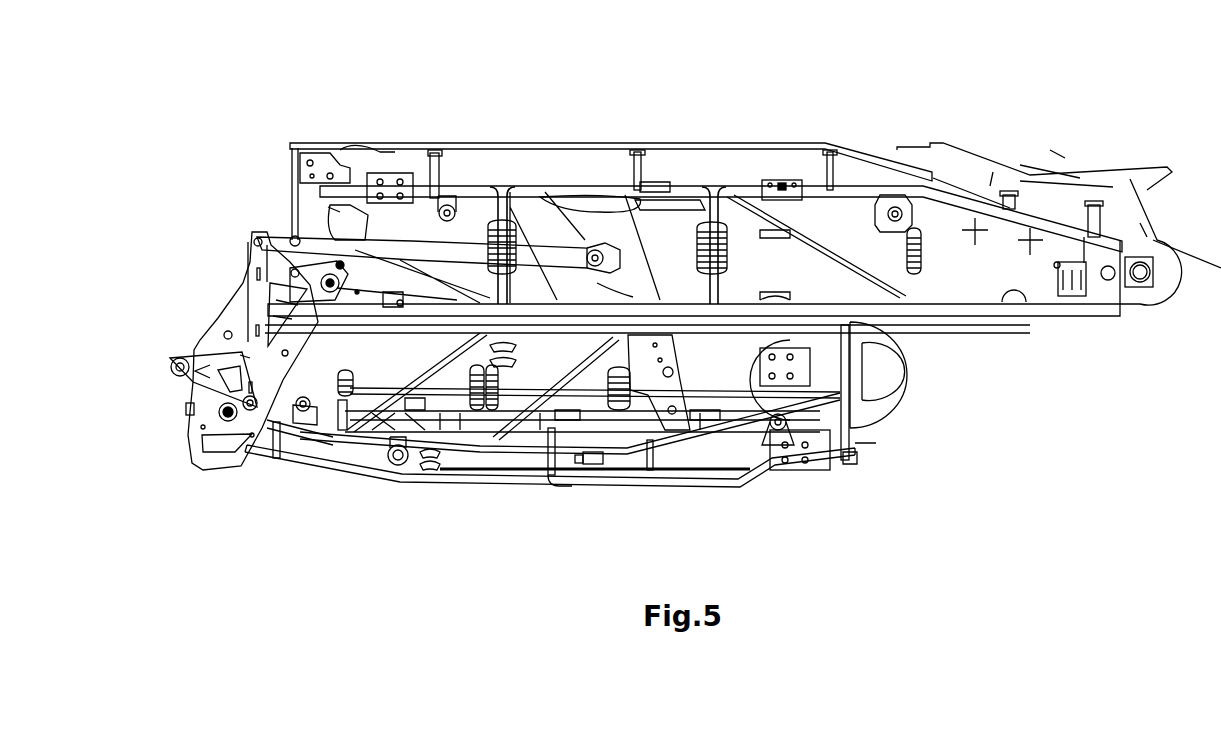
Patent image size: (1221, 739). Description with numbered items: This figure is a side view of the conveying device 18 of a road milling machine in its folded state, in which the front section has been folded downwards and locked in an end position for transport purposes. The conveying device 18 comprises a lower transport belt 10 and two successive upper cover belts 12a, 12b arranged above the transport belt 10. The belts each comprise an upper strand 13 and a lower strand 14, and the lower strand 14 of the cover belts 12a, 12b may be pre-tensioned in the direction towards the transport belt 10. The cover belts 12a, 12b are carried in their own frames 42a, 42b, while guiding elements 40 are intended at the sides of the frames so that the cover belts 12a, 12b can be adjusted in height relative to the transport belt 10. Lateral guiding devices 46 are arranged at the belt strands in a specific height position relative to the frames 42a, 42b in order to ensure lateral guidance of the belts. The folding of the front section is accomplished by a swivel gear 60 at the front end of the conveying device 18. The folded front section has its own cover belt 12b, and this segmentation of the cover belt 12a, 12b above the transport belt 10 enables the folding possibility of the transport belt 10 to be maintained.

The transport belt 10 is at (927, 383).
The cover belt 12a is at (462, 146).
The cover belt 12b is at (475, 484).
The upper strand 13 is at (768, 187).
The lower strand 14 is at (669, 235).
The conveying device 18 is at (1071, 138).
The guiding elements 40 is at (466, 208).
The frame 42a is at (541, 144).
The frame 42b is at (687, 490).
The lateral guiding devices 46 is at (397, 467).
The swivel gear 60 is at (218, 344).